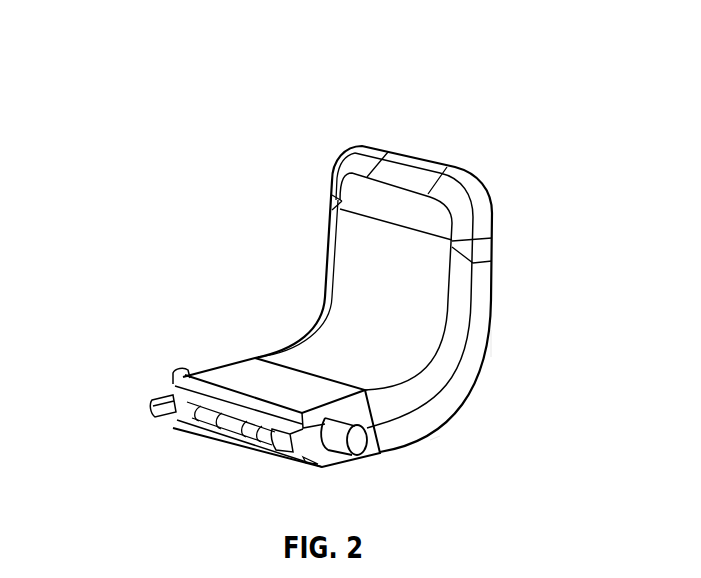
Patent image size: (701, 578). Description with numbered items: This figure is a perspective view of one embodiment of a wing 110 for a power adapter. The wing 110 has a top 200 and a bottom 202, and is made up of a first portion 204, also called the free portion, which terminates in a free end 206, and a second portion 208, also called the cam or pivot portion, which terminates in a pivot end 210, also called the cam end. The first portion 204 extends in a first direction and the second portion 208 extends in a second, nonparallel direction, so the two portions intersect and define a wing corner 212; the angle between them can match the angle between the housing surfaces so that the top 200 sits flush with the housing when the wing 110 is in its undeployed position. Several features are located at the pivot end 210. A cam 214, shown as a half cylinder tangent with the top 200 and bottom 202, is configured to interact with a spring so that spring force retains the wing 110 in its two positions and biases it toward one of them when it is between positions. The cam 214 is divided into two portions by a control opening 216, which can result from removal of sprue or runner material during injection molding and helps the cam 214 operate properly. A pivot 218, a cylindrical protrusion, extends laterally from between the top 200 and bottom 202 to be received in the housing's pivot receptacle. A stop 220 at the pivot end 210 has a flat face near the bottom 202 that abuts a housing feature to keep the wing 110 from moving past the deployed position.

The wing 110 is at (228, 137).
The top 200 is at (490, 295).
The bottom 202 is at (357, 272).
The first portion 204 is at (495, 245).
The free end 206 is at (417, 155).
The second portion 208 is at (405, 449).
The pivot end 210 is at (227, 445).
The wing corner 212 is at (467, 395).
The cam 214 is at (170, 392).
The control opening 216 is at (223, 432).
The pivot 218 is at (357, 443).
The stop 220 is at (155, 403).